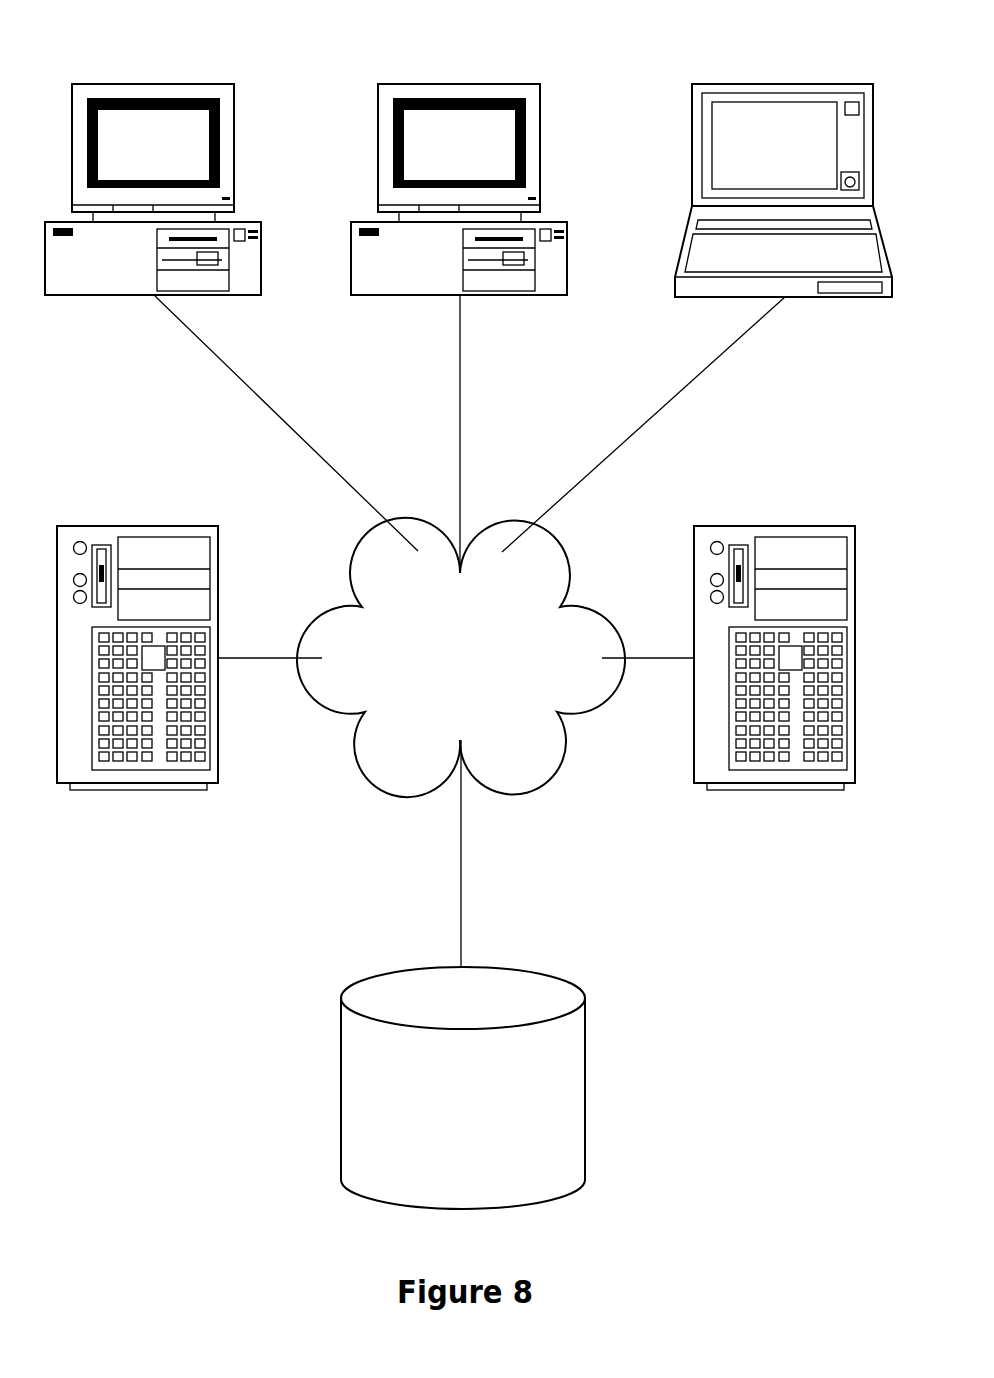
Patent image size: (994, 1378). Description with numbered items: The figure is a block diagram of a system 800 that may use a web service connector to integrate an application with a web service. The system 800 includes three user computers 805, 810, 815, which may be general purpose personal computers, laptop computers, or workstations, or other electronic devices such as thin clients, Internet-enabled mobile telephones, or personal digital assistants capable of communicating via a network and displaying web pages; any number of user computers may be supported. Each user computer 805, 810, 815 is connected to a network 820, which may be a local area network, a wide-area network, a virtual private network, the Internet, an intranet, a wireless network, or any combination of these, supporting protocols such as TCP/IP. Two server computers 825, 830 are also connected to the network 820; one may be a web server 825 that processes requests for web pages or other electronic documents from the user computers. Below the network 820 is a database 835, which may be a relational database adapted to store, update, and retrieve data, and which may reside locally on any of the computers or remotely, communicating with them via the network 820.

The system 800 is at (474, 616).
The user computer 805 is at (237, 295).
The user computer 810 is at (543, 296).
The user computer 815 is at (832, 297).
The network 820 is at (541, 723).
The web server 825 is at (193, 790).
The server computer 830 is at (830, 790).
The database 835 is at (557, 1178).